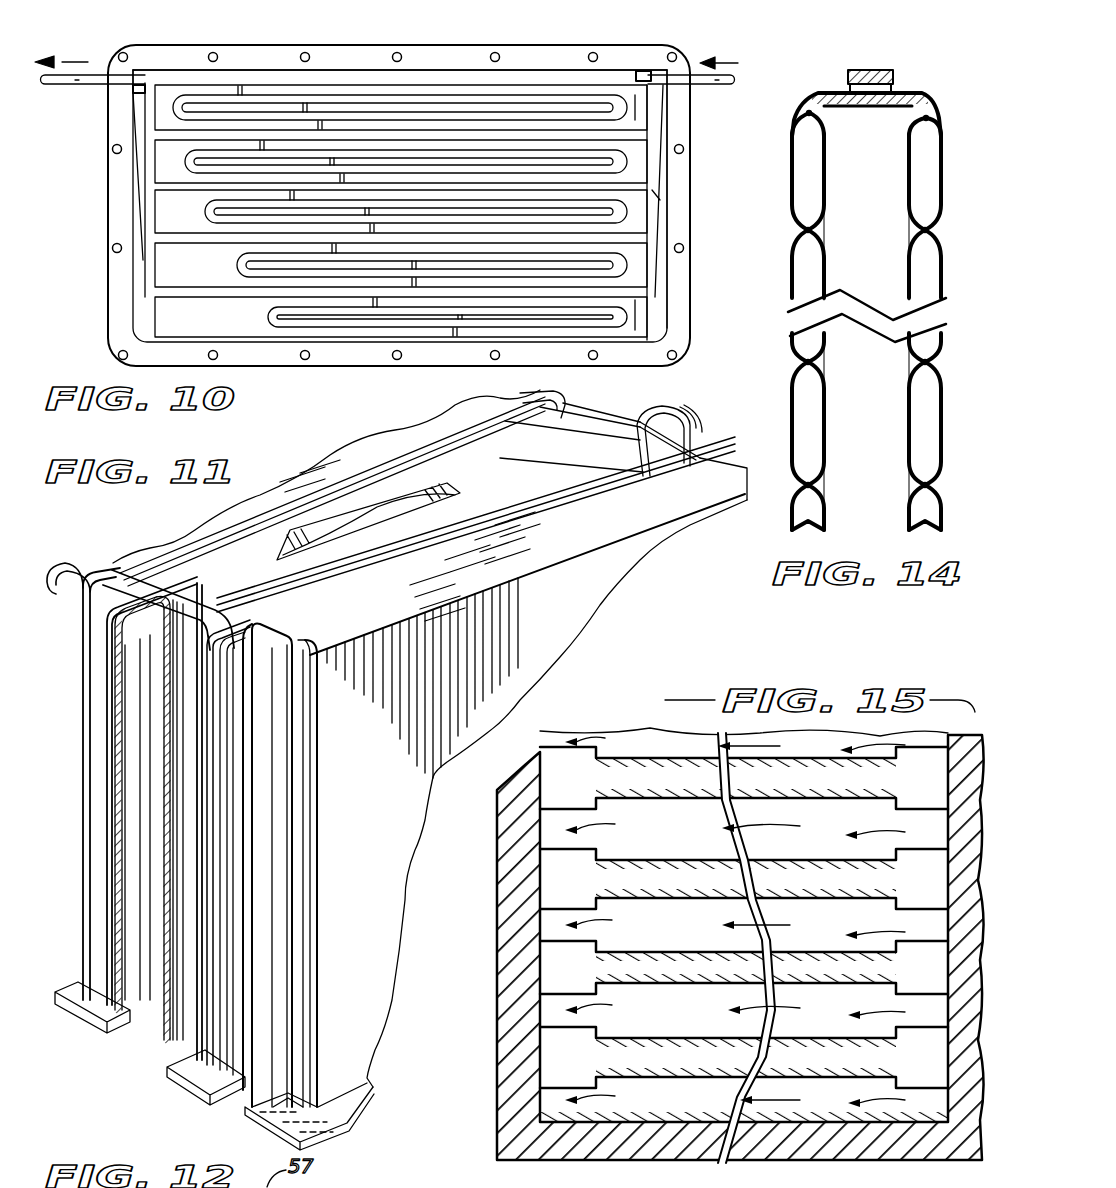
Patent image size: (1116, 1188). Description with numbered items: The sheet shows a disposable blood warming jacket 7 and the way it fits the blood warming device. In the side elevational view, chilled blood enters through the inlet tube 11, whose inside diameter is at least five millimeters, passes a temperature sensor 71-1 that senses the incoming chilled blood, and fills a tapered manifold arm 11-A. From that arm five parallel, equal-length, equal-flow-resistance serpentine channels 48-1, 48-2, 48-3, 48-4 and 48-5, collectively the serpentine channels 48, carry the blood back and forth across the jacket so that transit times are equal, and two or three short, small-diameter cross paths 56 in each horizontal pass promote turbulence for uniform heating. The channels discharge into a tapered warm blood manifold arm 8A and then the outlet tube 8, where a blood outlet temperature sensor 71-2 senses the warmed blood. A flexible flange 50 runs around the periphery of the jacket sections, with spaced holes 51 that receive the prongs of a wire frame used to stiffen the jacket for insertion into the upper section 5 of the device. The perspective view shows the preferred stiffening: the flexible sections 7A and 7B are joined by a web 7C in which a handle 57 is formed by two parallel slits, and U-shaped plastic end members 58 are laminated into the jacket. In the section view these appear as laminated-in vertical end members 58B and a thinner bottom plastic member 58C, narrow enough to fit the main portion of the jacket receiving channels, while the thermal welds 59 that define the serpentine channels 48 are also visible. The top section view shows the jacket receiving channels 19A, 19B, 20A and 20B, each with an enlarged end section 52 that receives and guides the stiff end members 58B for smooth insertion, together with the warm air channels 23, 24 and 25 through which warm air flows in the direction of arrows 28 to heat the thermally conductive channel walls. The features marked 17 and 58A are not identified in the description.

In FIG. 15, the upper section 5 is at (505, 1025).
In FIG. 10, the blood warming jacket 7 is at (395, 42).
In FIG. 14, the blood warming jacket 7 is at (922, 102).
In FIG. 11, the blood warming jacket 7 is at (600, 457).
In FIG. 10, the flexible section 7A is at (437, 48).
In FIG. 14, the flexible section 7A is at (902, 182).
In FIG. 14, the flexible section 7B is at (946, 185).
In FIG. 14, the web 7C is at (882, 108).
In FIG. 11, the web 7C is at (608, 445).
In FIG. 10, the outlet tube 8 is at (62, 88).
In FIG. 10, the tapered warm blood manifold arm 8A is at (148, 205).
In FIG. 10, the chilled blood inlet tube 11 is at (724, 82).
In FIG. 10, the tapered manifold arm 11-A is at (652, 192).
In FIG. 15, the flow channel 17 is at (545, 832).
In FIG. 15, the jacket receiving channel 19A is at (642, 965).
In FIG. 15, the jacket receiving channel 19B is at (640, 1052).
In FIG. 15, the jacket receiving channel 20A is at (657, 770).
In FIG. 15, the jacket receiving channel 20B is at (648, 878).
In FIG. 11, the warm air channel 23 is at (54, 598).
In FIG. 15, the warm air channel 23 is at (648, 913).
In FIG. 11, the warm air channel 24 is at (128, 660).
In FIG. 15, the warm air channel 24 is at (706, 1035).
In FIG. 11, the warm air channel 25 is at (235, 657).
In FIG. 15, the warm air channel 25 is at (660, 1112).
In FIG. 15, the arrows 28 is at (705, 822).
In FIG. 14, the serpentine channels 48 is at (930, 212).
In FIG. 10, the serpentine channel 48-1 is at (640, 122).
In FIG. 10, the serpentine channel 48-2 is at (640, 142).
In FIG. 10, the serpentine channel 48-3 is at (640, 232).
In FIG. 10, the serpentine channel 48-4 is at (636, 272).
In FIG. 10, the serpentine channel 48-5 is at (632, 320).
In FIG. 10, the flexible flange 50 is at (352, 355).
In FIG. 10, the spaced holes 51 is at (113, 250).
In FIG. 15, the enlarged end sections 52 is at (560, 775).
In FIG. 10, the cross paths 56 is at (468, 88).
In FIG. 14, the handle 57 is at (872, 70).
In FIG. 11, the handle 57 is at (360, 495).
In FIG. 11, the U-shaped plastic end members 58 is at (713, 437).
In FIG. 11, the strap side wall 58A is at (90, 847).
In FIG. 11, the vertical end members 58B is at (190, 975).
In FIG. 14, the bottom plastic member 58C is at (808, 513).
In FIG. 14, the thermal welds 59 is at (922, 231).
In FIG. 10, the temperature sensor 71-1 is at (660, 68).
In FIG. 10, the blood outlet temperature sensor 71-2 is at (132, 100).